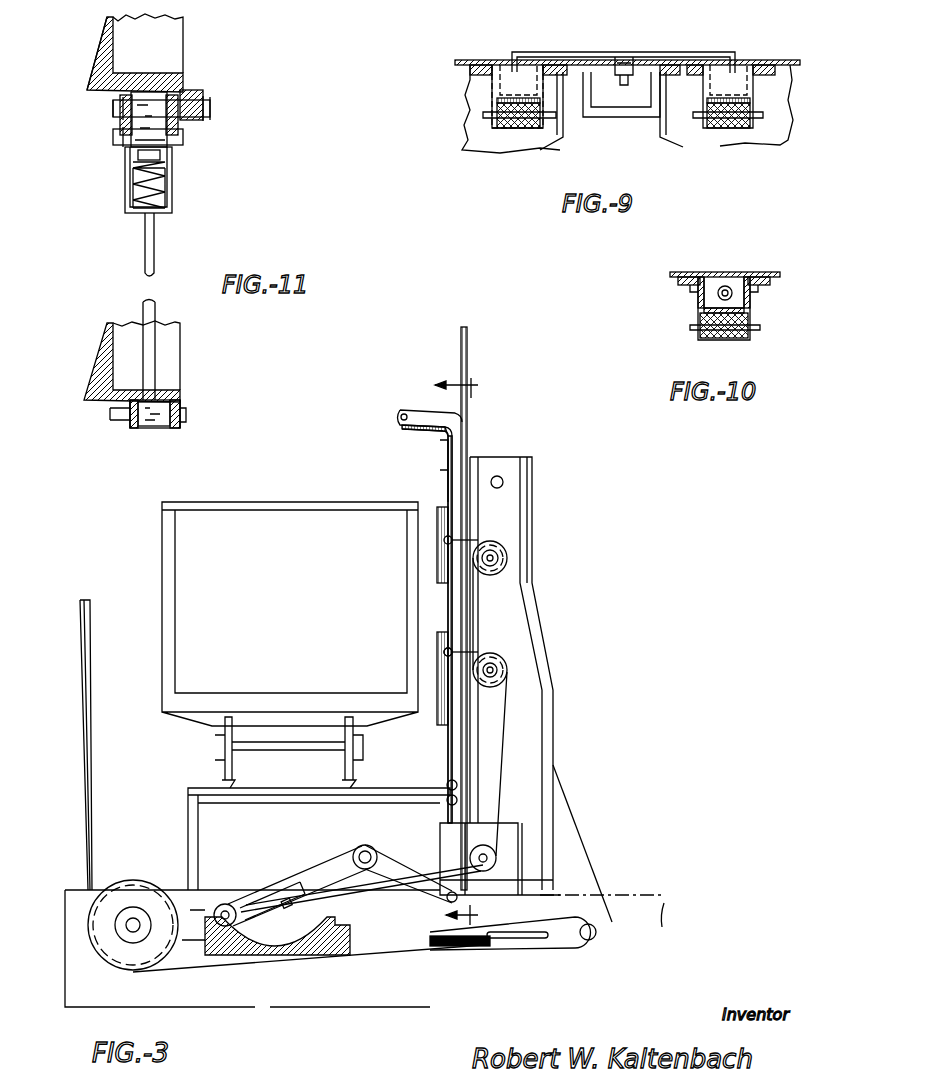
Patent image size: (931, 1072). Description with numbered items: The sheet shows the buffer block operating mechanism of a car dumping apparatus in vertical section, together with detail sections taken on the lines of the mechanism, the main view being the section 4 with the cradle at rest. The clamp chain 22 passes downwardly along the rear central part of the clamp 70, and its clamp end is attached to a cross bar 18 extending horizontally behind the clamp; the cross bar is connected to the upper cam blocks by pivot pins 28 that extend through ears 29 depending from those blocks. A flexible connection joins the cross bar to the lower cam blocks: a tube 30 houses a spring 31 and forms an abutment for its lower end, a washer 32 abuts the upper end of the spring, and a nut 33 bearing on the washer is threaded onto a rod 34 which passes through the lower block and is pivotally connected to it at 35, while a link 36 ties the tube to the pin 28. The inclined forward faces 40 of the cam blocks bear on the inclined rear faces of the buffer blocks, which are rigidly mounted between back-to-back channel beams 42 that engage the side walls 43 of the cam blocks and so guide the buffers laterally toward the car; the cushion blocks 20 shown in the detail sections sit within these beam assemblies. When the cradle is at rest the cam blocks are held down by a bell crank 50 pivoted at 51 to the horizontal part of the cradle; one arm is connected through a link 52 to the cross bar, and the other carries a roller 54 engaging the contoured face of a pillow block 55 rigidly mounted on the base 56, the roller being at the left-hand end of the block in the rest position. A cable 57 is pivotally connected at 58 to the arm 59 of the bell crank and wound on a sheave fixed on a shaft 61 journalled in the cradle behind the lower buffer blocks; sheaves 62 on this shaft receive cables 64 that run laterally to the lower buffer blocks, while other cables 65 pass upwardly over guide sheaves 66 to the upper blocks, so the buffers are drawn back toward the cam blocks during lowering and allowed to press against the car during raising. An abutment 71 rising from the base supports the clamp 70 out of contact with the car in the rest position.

In FIG. 3, the section line 4- 4 is at (441, 650).
In FIG. 11, the cross bar 18 is at (196, 95).
In FIG. 9, the cross bar 18 is at (560, 52).
In FIG. 9, the rubber cushion block 20 is at (500, 135).
In FIG. 10, the rubber cushion block 20 is at (750, 338).
In FIG. 9, the clamp chain 22 is at (618, 90).
In FIG. 3, the clamp chain 22 is at (468, 362).
In FIG. 11, the pivot pin 28 is at (211, 107).
In FIG. 11, the ear 29 is at (121, 115).
In FIG. 11, the tube 30 is at (173, 166).
In FIG. 11, the spring 31 is at (162, 196).
In FIG. 11, the washer 32 is at (134, 166).
In FIG. 11, the nut 33 is at (138, 155).
In FIG. 11, the rod 34 is at (155, 257).
In FIG. 10, the rod 34 is at (732, 296).
In FIG. 11, the pivotal connection 35 is at (184, 409).
In FIG. 11, the link 36 is at (138, 122).
In FIG. 11, the forward face of cam block 40 is at (106, 40).
In FIG. 9, the forward face of cam block 40 is at (505, 80).
In FIG. 10, the forward face of cam block 40 is at (710, 287).
In FIG. 9, the beam 42 is at (497, 110).
In FIG. 9, the side wall of cam block 43 is at (563, 138).
In FIG. 3, the bell crank 50 is at (332, 855).
In FIG. 3, the pivot 51 is at (370, 847).
In FIG. 3, the link 52 is at (466, 900).
In FIG. 3, the roller 54 is at (228, 904).
In FIG. 3, the pillow block 55 is at (240, 956).
In FIG. 3, the base 56 is at (650, 880).
In FIG. 3, the cable 57 is at (501, 750).
In FIG. 3, the pivotal connection 58 is at (290, 908).
In FIG. 3, the arm of bell crank 59 is at (270, 895).
In FIG. 3, the shaft 61 is at (498, 670).
In FIG. 3, the sheave 62 is at (505, 686).
In FIG. 3, the cable 64 is at (470, 652).
In FIG. 3, the cable 65 is at (475, 540).
In FIG. 3, the guide sheave 66 is at (500, 556).
In FIG. 3, the clamp 70 is at (442, 428).
In FIG. 3, the abutment 71 is at (438, 848).